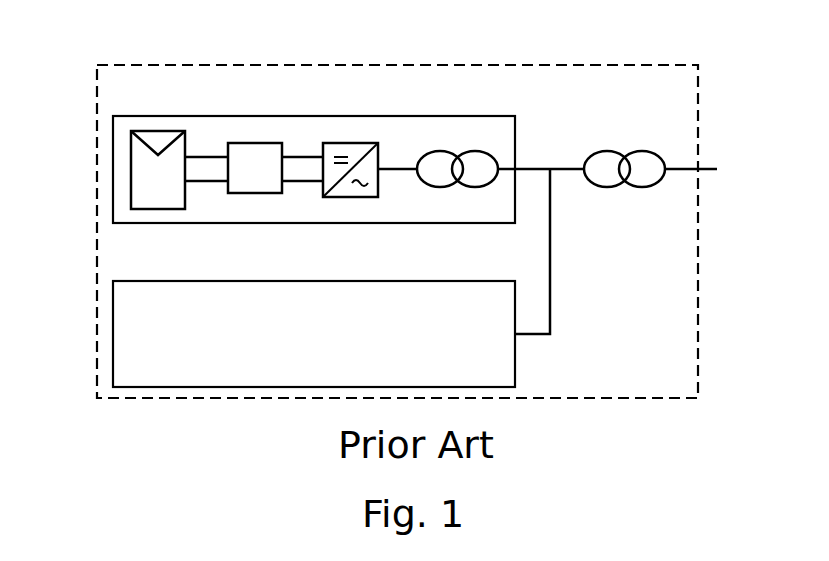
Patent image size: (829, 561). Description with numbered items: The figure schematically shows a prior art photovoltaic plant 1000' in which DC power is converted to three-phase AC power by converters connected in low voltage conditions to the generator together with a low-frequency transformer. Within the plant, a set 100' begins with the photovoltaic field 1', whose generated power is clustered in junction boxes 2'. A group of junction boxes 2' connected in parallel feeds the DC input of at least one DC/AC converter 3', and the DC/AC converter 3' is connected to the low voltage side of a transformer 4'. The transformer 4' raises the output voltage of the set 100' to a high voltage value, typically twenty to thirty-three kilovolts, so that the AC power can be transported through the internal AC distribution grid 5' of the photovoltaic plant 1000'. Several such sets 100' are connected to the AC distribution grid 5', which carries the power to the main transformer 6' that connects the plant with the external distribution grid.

The photovoltaic plant 1000' is at (394, 202).
The set 100' is at (272, 251).
The photovoltaic field 1' is at (175, 145).
The junction boxes 2' is at (254, 140).
The DC/AC converter 3' is at (369, 142).
The transformer 4' is at (464, 206).
The internal AC distribution grid 5' is at (561, 224).
The main transformer 6' is at (650, 192).